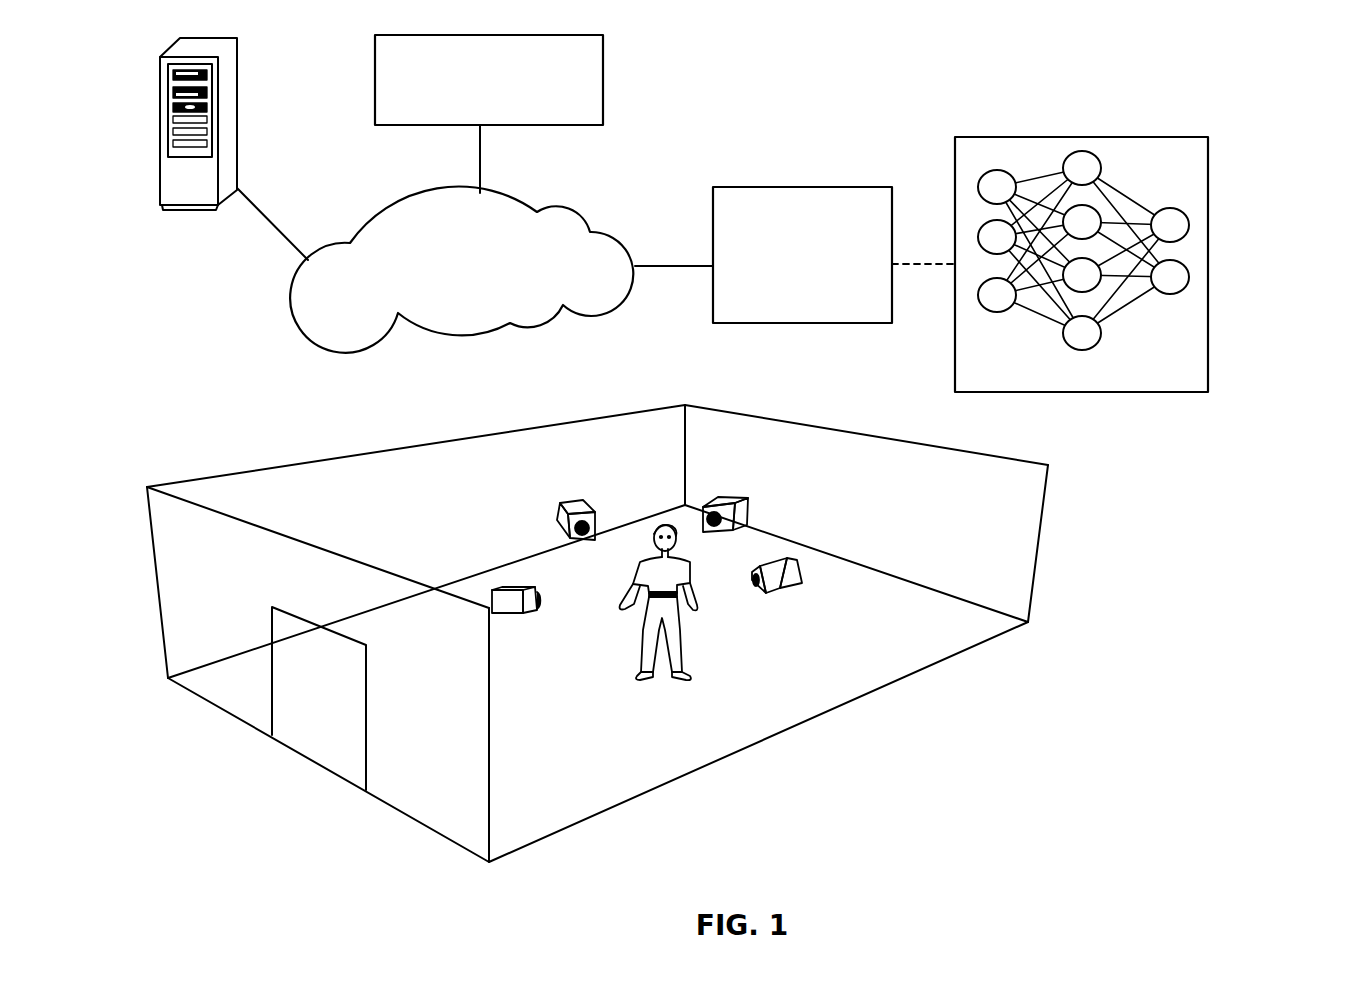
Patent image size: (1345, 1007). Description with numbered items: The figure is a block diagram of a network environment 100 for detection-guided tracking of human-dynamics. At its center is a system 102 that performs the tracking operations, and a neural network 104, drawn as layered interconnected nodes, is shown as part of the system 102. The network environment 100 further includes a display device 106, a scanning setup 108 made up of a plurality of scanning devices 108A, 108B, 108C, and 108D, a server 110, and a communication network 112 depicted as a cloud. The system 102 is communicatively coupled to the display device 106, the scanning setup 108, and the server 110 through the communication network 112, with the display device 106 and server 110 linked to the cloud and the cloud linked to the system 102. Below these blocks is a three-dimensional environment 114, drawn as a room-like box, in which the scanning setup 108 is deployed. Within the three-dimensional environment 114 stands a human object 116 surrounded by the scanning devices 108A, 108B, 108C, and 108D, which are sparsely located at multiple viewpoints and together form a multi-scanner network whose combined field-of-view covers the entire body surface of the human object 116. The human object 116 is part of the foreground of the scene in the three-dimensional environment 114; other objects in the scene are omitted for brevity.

The network environment 100 is at (1273, 87).
The system 102 is at (802, 255).
The neural network 104 is at (1081, 264).
The display device 106 is at (489, 80).
The scanning setup 108 is at (572, 370).
The scanning device 108A is at (737, 498).
The scanning device 108B is at (777, 562).
The scanning device 108C is at (577, 502).
The scanning device 108D is at (505, 588).
The server 110 is at (160, 92).
The communication network 112 is at (461, 270).
The three-dimensional (3D) environment 114 is at (1013, 543).
The human object 116 is at (655, 523).